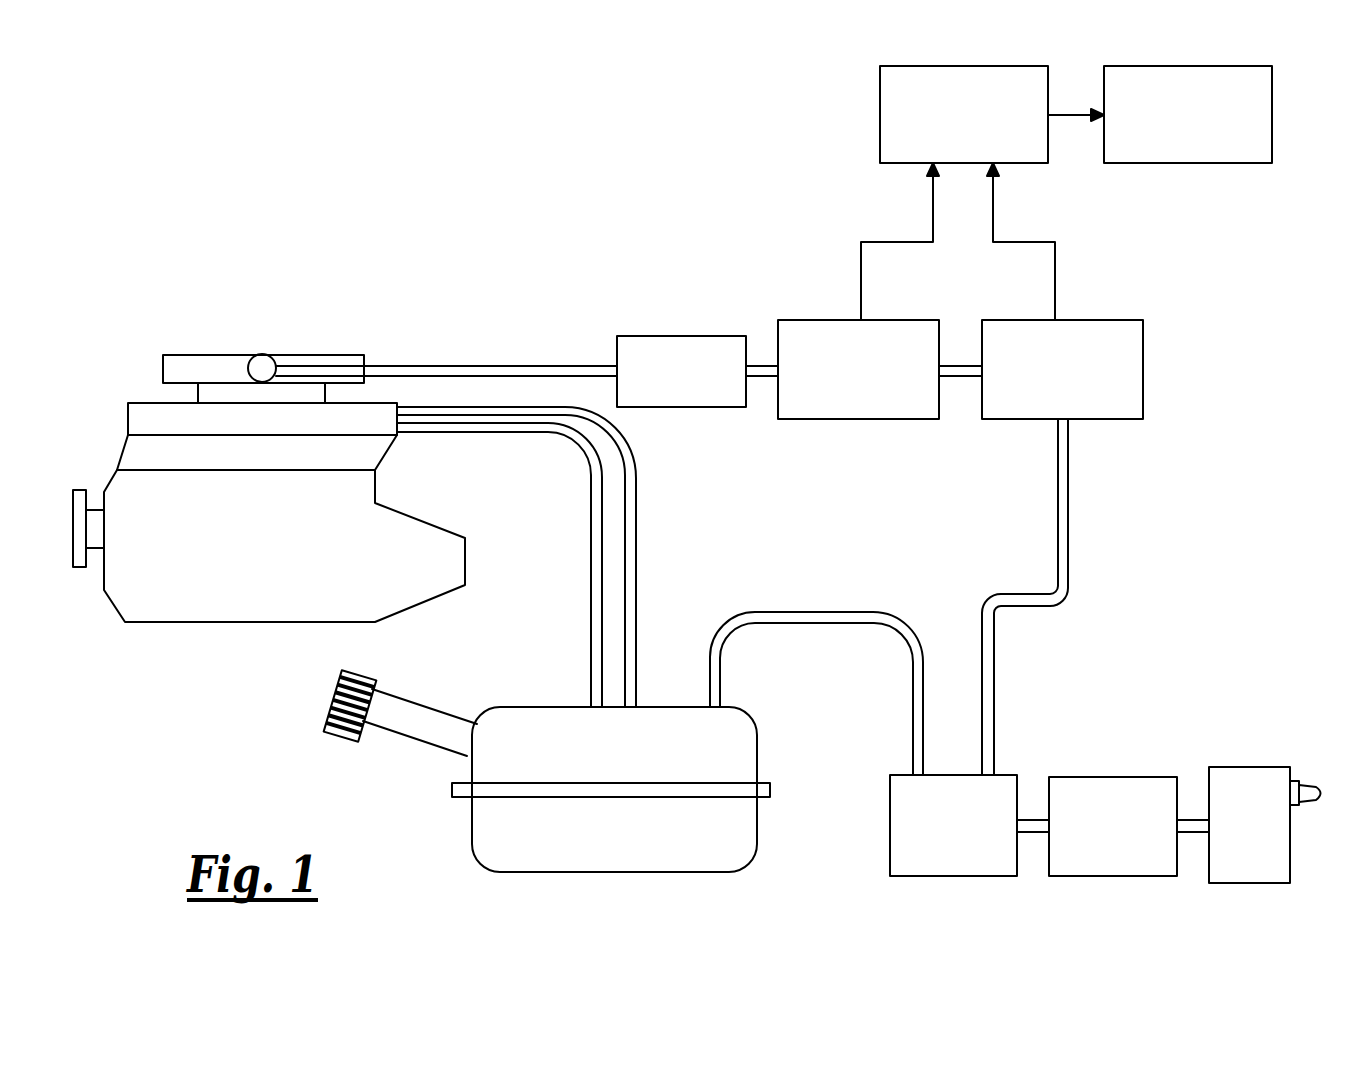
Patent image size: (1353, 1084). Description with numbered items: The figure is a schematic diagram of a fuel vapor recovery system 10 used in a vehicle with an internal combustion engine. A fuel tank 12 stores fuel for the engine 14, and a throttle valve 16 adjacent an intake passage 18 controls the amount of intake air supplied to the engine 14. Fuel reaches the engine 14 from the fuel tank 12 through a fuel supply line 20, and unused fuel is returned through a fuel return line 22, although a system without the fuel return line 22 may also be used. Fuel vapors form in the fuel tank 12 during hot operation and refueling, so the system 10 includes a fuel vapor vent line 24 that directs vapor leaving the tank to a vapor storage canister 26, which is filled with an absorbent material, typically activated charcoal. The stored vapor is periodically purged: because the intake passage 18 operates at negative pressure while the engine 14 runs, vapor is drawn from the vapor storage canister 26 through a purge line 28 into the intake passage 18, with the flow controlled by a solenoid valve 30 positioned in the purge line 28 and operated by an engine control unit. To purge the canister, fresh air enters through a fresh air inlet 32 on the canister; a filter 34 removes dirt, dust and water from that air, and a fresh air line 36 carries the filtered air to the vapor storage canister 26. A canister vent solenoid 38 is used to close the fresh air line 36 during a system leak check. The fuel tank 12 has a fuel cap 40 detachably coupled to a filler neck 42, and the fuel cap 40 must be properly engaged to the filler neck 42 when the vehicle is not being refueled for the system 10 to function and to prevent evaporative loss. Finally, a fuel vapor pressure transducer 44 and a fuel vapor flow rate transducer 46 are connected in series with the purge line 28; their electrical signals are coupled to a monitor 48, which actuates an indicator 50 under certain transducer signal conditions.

The fuel vapor recovery system 10 is at (737, 170).
The fuel tank 12 is at (595, 873).
The engine 14 is at (173, 623).
The throttle valve 16 is at (262, 355).
The intake passage 18 is at (198, 395).
The fuel supply line 20 is at (636, 528).
The fuel return line 22 is at (591, 562).
The fuel vapor vent line 24 is at (822, 612).
The vapor storage canister 26 is at (963, 877).
The purge line 28 is at (552, 366).
The solenoid valve 30 is at (683, 336).
The fresh air inlet 32 is at (1033, 833).
The filter 34 is at (1244, 767).
The fresh air line 36 is at (1195, 818).
The canister vent solenoid 38 is at (1122, 777).
The fuel cap 40 is at (330, 710).
The filler neck 42 is at (397, 740).
The fuel vapor pressure transducer 44 is at (803, 320).
The fuel vapor flow rate transducer 46 is at (1112, 320).
The monitor 48 is at (880, 103).
The indicator 50 is at (1205, 165).